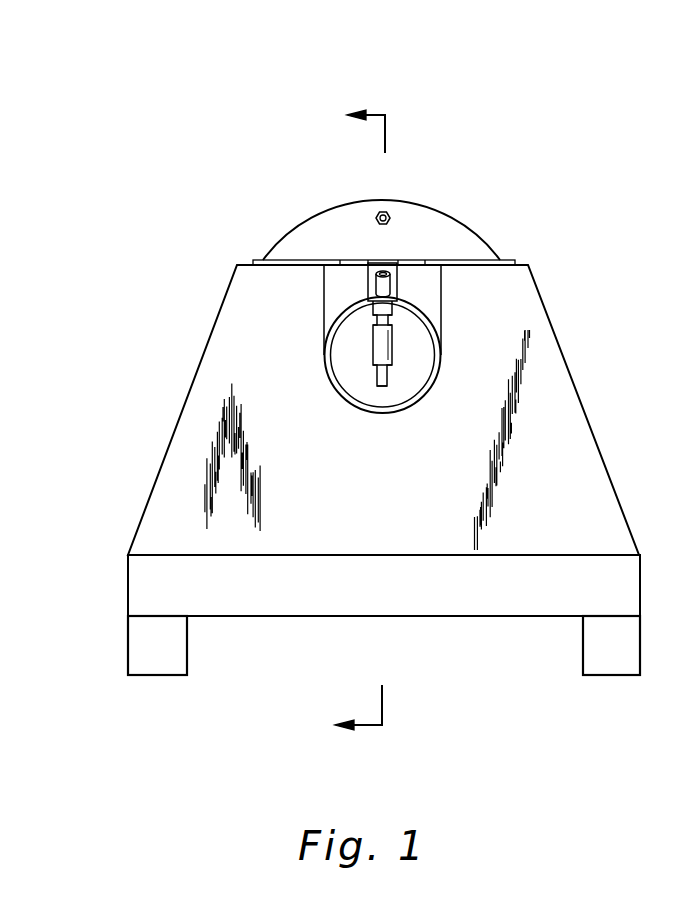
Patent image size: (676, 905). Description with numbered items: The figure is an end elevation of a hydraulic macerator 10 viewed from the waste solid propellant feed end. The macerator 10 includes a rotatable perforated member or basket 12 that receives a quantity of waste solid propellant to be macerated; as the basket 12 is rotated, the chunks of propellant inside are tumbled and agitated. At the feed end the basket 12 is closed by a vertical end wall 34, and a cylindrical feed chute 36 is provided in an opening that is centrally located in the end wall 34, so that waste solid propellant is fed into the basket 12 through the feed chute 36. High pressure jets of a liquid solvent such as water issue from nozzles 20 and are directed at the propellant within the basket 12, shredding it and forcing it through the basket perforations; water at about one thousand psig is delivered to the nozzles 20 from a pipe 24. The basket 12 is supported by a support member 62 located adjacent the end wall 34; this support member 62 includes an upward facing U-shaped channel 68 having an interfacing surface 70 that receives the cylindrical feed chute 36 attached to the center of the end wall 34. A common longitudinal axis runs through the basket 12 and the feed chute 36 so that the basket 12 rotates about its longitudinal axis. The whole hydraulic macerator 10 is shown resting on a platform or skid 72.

The hydraulic macerator 10 is at (457, 198).
The rotatable perforated member or basket 12 is at (292, 232).
The vertical end wall 34 is at (470, 243).
The pipe 24 is at (375, 287).
The upward facing U-shaped channel 68 is at (430, 300).
The cylindrical feed chute 36 is at (330, 330).
The interfacing surface 70 is at (370, 392).
The nozzles 20 is at (383, 373).
The support member 62 is at (170, 463).
The platform or skid 72 is at (175, 645).